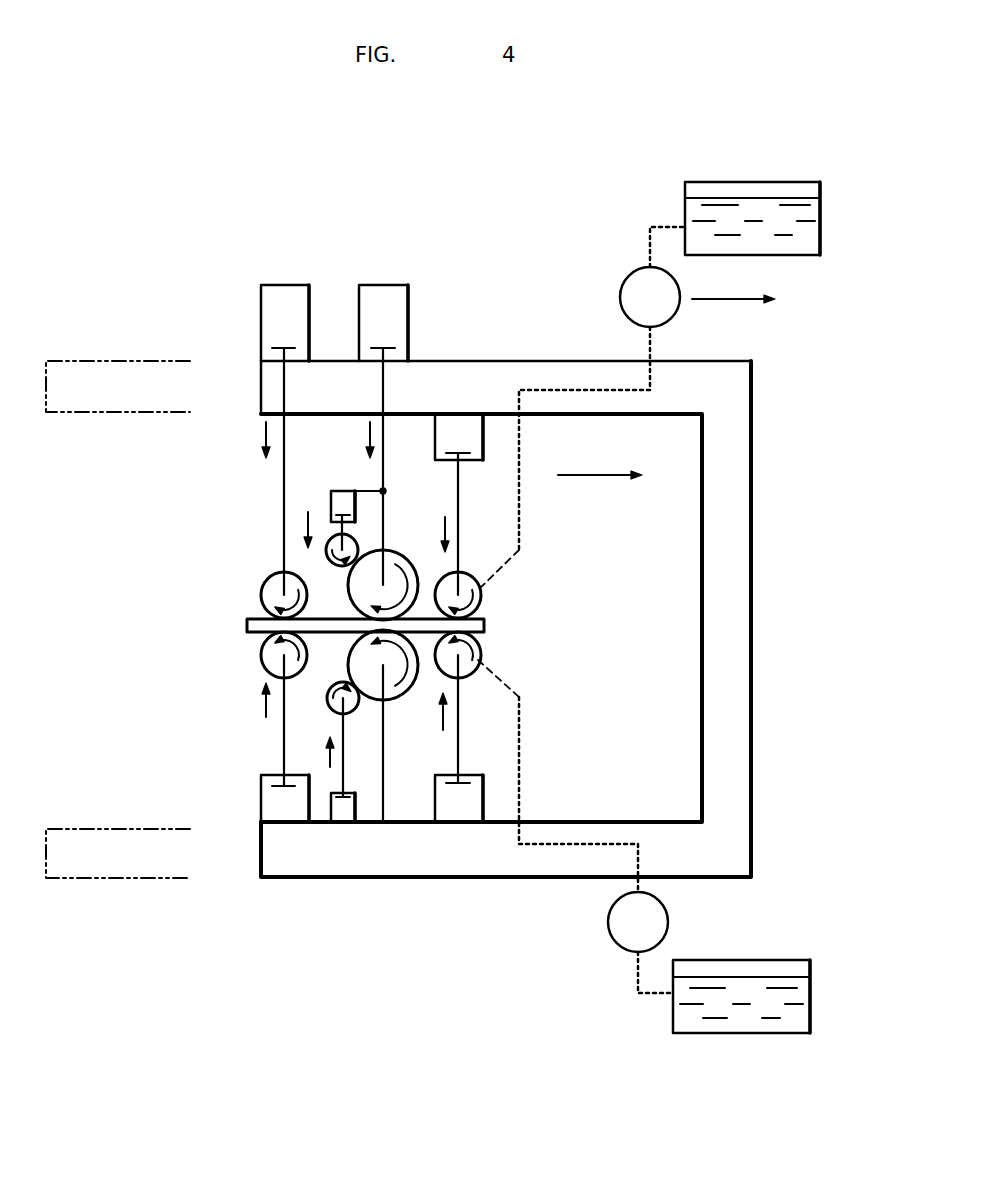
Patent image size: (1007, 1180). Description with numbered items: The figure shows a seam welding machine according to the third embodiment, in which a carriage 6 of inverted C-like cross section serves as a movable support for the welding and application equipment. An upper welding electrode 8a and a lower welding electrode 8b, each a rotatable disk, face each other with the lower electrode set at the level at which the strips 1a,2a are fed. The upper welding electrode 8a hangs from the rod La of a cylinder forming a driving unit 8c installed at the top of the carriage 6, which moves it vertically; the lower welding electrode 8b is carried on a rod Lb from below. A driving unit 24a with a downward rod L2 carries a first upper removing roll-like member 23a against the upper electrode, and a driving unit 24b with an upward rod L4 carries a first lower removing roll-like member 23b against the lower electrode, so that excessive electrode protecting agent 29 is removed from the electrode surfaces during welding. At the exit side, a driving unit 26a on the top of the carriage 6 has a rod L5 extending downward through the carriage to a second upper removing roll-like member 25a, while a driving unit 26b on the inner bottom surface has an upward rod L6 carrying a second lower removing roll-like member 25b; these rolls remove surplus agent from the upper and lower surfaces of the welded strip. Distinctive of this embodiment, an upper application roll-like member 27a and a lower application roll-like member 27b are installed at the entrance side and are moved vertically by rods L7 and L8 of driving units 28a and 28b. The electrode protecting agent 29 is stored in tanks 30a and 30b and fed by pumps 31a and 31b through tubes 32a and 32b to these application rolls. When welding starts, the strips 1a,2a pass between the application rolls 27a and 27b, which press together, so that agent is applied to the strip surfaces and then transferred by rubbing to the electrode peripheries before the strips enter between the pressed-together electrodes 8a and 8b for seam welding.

The carriage 6 is at (740, 448).
The driving unit 26a is at (283, 285).
The driving unit 26b is at (261, 800).
The driving unit 8c is at (383, 285).
The upper welding electrode 8a is at (396, 558).
The lower welding electrode 8b is at (390, 700).
The driving unit 28a is at (483, 437).
The driving unit 28b is at (483, 800).
The driving unit 24a is at (342, 491).
The driving unit 24b is at (342, 822).
The first upper removing roll-like member 23a is at (330, 567).
The first lower removing roll-like member 23b is at (343, 702).
The second upper removing roll-like member 25a is at (262, 592).
The second lower removing roll-like member 25b is at (262, 652).
The upper application roll-like member 27a is at (481, 595).
The lower application roll-like member 27b is at (481, 655).
The strips 1a,2a is at (484, 628).
The rod La is at (383, 390).
The shaft line of roller 8b Lb is at (385, 800).
The rod L2 is at (330, 525).
The rod L4 is at (348, 783).
The rod L5 is at (280, 505).
The rod L6 is at (283, 745).
The rod L7 is at (462, 520).
The rod L8 is at (462, 733).
The tank 30a is at (748, 182).
The tank 30b is at (765, 960).
The pump 31a is at (628, 278).
The pump 31b is at (615, 945).
The tube 32a is at (548, 390).
The tube 32b is at (535, 845).
The electrode protecting agent 29 is at (790, 255).